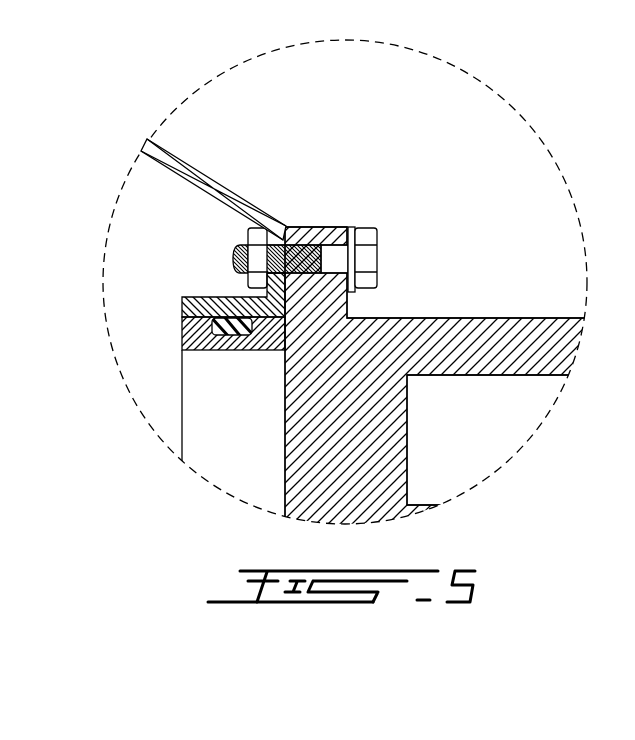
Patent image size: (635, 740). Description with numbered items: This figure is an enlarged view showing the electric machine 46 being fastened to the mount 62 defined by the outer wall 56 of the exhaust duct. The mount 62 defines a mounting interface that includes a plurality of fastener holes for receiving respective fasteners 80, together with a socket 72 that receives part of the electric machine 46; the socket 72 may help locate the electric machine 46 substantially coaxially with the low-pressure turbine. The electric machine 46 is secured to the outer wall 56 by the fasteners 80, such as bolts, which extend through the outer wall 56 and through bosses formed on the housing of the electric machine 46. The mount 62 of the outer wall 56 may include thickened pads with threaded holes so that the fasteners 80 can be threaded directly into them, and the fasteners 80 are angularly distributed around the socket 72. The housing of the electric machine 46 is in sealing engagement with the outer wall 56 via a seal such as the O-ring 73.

The electric machine 46 is at (358, 485).
The outer wall 56 is at (223, 192).
The mount 62 is at (166, 248).
The socket 72 is at (152, 392).
The O-ring 73 is at (212, 331).
The fasteners 80 is at (372, 227).